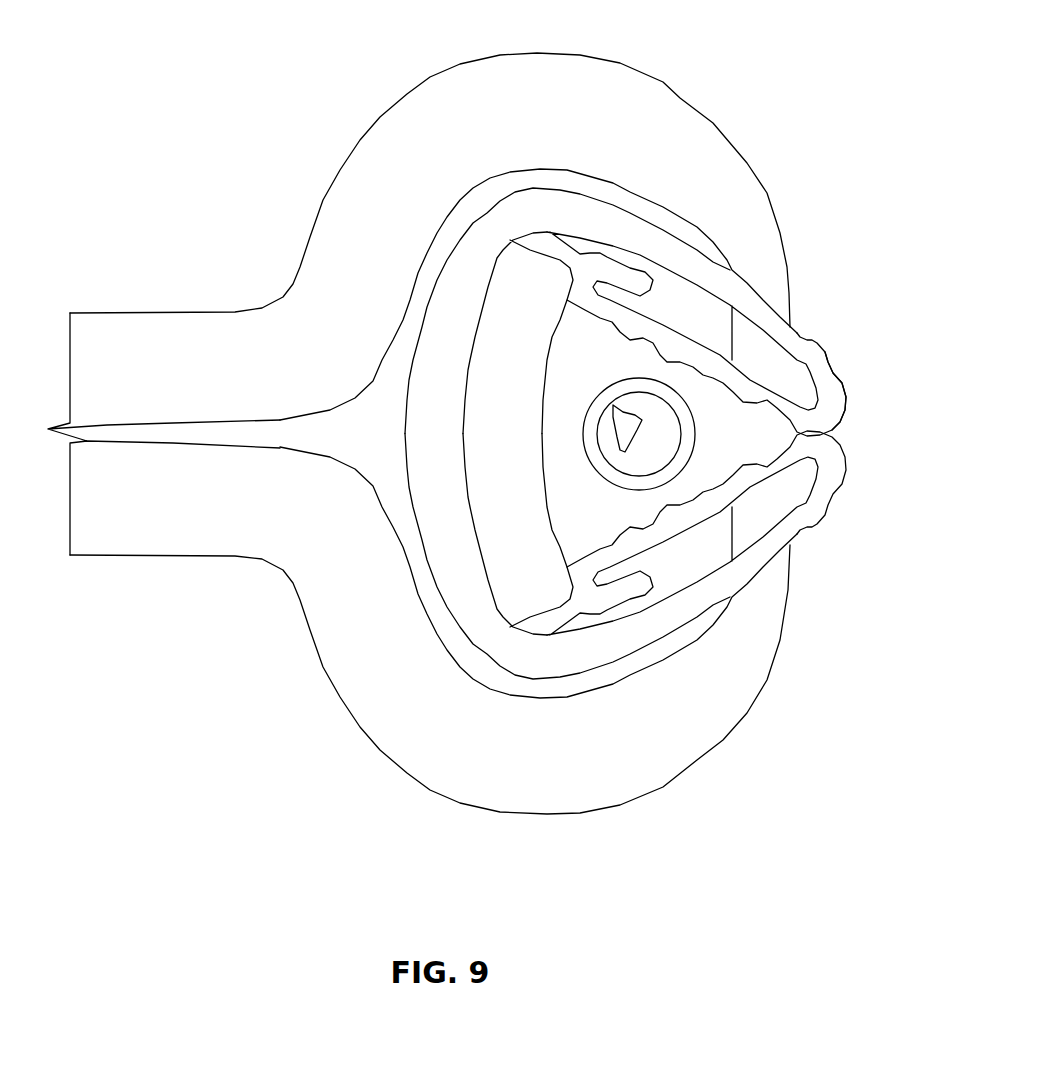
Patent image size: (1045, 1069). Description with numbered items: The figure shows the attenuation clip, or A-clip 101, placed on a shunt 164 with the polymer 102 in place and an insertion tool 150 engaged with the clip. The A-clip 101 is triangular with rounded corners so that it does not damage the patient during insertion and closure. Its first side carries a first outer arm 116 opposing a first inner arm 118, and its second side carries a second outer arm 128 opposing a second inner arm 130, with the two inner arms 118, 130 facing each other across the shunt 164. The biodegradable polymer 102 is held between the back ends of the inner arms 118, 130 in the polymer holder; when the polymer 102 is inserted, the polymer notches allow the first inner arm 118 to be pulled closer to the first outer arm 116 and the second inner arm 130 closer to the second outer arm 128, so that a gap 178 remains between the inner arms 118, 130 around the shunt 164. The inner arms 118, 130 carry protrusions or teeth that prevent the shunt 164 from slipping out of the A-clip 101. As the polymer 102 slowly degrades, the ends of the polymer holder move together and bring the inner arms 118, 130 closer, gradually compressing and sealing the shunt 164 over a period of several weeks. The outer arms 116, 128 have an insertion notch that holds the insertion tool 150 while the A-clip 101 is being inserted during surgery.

The A-clip 101 is at (850, 392).
The polymer 102 is at (502, 283).
The first outer arm 116 is at (560, 207).
The first inner arm 118 is at (713, 350).
The second outer arm 128 is at (543, 655).
The second inner arm 130 is at (701, 505).
The insertion tool 150 is at (133, 542).
The shunt 164 is at (653, 407).
The gap 178 is at (835, 458).